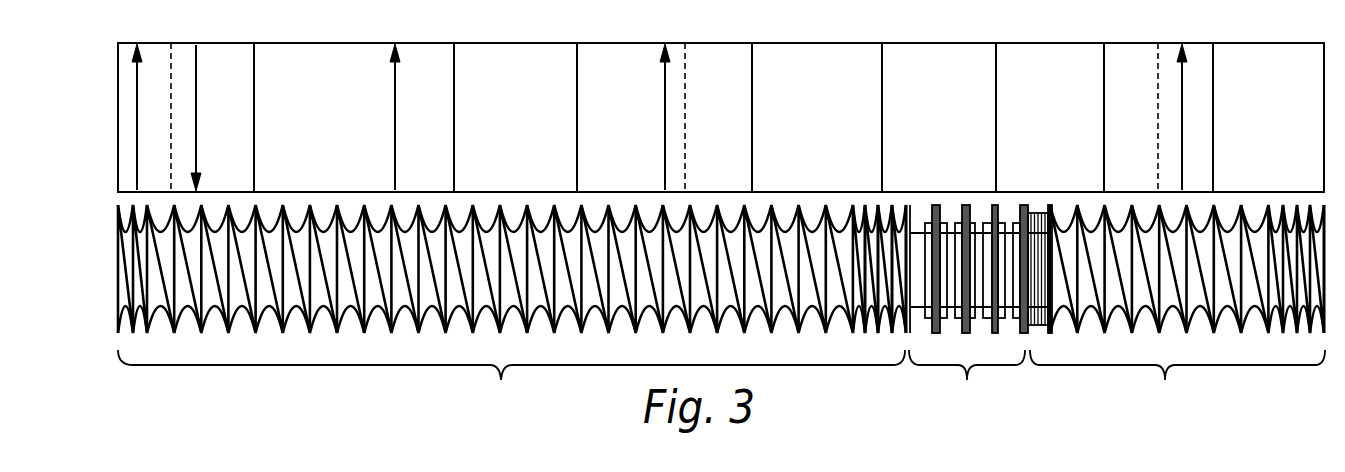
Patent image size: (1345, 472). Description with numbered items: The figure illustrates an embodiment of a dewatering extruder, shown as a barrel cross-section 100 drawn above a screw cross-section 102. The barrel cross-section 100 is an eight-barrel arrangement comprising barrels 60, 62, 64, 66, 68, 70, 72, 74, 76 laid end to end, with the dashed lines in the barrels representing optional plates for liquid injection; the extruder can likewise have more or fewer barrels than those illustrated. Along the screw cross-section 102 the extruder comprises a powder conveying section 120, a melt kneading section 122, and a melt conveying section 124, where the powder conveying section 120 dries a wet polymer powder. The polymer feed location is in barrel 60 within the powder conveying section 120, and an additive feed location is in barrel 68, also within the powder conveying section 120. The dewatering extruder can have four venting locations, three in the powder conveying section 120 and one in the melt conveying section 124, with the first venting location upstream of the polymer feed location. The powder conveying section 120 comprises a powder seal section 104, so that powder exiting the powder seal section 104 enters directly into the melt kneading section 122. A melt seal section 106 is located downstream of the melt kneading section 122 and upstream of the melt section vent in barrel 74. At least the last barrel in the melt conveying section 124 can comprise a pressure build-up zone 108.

The barrel cross-section 100 is at (110, 143).
The screw cross-section 102 is at (106, 274).
The barrel 60 is at (211, 133).
The barrel 62 is at (334, 133).
The barrel 64 is at (502, 133).
The barrel 66 is at (623, 133).
The barrel 68 is at (806, 133).
The barrel 70 is at (930, 133).
The barrel 72 is at (1039, 133).
The barrel 74 is at (1120, 133).
The barrel 76 is at (1254, 133).
The powder seal section 104 is at (880, 303).
The melt seal section 106 is at (1040, 285).
The pressure build-up zone 108 is at (1287, 281).
The powder conveying section 120 is at (511, 381).
The melt kneading section 122 is at (967, 381).
The melt conveying section 124 is at (1177, 381).